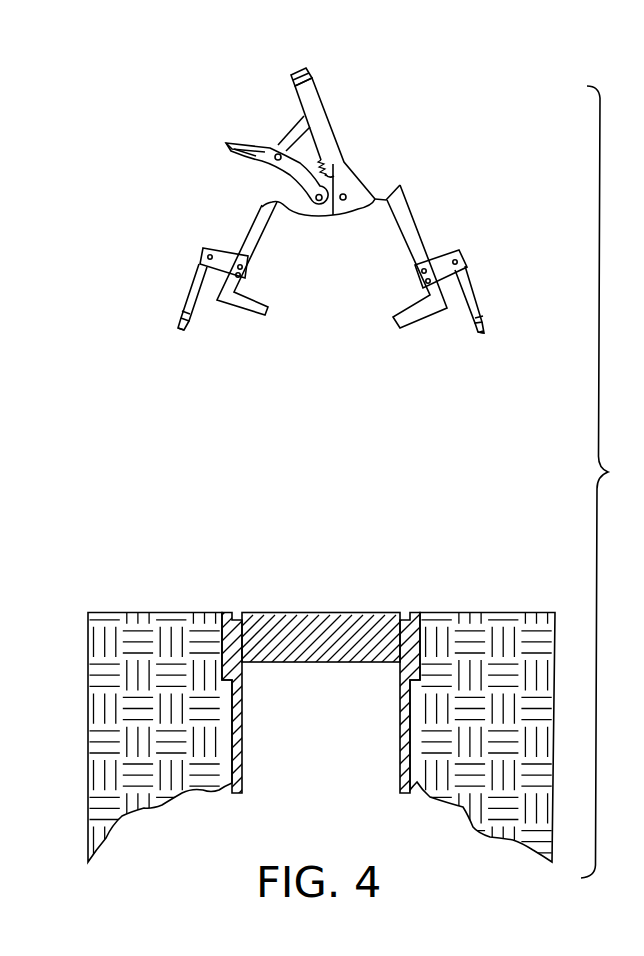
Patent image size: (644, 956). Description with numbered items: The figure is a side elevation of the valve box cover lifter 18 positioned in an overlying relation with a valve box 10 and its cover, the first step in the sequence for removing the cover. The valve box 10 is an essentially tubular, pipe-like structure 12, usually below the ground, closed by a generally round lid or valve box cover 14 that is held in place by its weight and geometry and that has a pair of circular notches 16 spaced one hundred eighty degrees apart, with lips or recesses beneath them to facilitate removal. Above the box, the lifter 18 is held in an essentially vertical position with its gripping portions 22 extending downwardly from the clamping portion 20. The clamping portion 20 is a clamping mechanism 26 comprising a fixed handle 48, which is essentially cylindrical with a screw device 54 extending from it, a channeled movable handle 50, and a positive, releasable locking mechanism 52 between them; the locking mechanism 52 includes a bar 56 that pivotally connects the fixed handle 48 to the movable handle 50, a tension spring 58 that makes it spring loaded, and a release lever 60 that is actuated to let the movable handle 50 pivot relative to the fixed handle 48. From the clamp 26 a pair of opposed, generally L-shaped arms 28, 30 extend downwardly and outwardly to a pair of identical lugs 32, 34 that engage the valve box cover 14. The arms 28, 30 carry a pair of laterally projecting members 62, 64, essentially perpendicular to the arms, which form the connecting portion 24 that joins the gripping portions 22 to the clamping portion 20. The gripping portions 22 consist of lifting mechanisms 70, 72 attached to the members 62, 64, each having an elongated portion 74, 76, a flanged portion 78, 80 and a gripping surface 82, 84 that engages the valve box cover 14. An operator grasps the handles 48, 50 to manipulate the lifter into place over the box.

The valve box 10 is at (88, 599).
The pipe-like structure 12 is at (152, 612).
The valve box cover 14 is at (329, 622).
The circular notches 16 is at (241, 612).
The valve box cover lifter 18 is at (442, 121).
The clamping portion 20 is at (291, 75).
The gripping portions 22 is at (180, 333).
The connecting portion 24 is at (228, 252).
The clamping mechanism 26 is at (323, 136).
The arm 28 is at (390, 196).
The arm 30 is at (278, 190).
The lug 32 is at (497, 279).
The lug 34 is at (185, 267).
The fixed handle 48 is at (312, 101).
The movable handle 50 is at (252, 163).
The releasable locking mechanism 52 is at (301, 119).
The screw device 54 is at (312, 73).
The bar 56 is at (281, 140).
The tension spring 58 is at (326, 164).
The release lever 60 is at (226, 143).
The member 62 is at (461, 252).
The member 64 is at (204, 248).
The lifting mechanism 70 is at (484, 321).
The lifting mechanism 72 is at (182, 312).
The elongated portion 74 is at (476, 308).
The elongated portion 76 is at (188, 300).
The flanged portion 78 is at (483, 337).
The flanged portion 80 is at (181, 336).
The gripping surface 82 is at (478, 336).
The gripping surface 84 is at (185, 331).